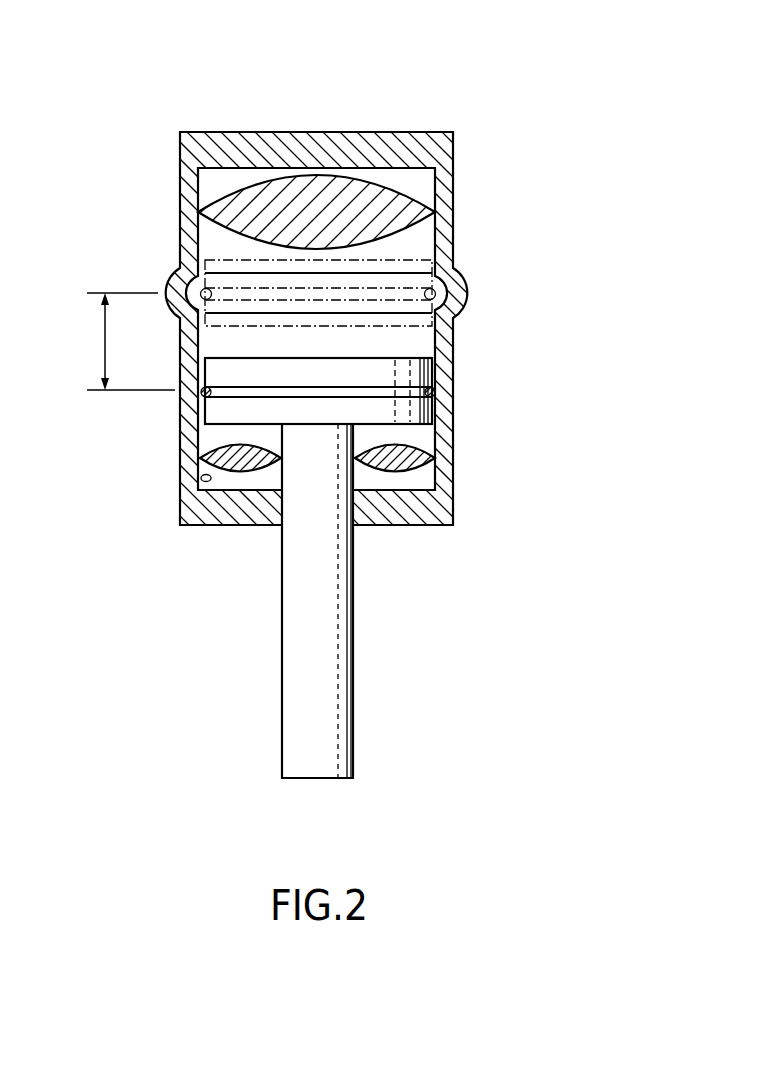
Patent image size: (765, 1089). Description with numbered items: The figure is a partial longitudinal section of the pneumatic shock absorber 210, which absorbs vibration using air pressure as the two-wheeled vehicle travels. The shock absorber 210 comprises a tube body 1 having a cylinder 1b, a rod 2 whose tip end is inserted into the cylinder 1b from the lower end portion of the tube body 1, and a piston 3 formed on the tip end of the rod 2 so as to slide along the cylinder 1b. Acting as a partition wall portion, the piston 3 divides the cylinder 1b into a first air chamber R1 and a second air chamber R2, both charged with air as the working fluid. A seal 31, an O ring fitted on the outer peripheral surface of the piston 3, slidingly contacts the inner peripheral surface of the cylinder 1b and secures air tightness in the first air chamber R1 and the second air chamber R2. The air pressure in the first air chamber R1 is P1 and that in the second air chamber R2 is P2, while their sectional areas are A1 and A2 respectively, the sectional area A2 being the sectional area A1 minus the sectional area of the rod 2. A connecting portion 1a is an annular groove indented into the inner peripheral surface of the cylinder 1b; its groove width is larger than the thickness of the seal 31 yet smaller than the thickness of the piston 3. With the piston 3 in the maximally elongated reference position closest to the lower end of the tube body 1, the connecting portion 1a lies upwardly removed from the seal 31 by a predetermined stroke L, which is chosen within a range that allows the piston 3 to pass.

The shock absorber 210 is at (455, 94).
The tube body 1 is at (454, 441).
The connecting portion 1a is at (436, 293).
The cylinder 1b is at (203, 478).
The rod 2 is at (355, 672).
The piston 3 is at (392, 262).
The seal 31 is at (434, 392).
The sectional area of the first air chamber A1 is at (250, 218).
The sectional area of the second air chamber A2 is at (243, 465).
The first air chamber R1 is at (218, 178).
The second air chamber R2 is at (213, 435).
The air pressure of the first air chamber P1 is at (440, 175).
The air pressure of the second air chamber P2 is at (427, 478).
The predetermined stroke L is at (105, 338).